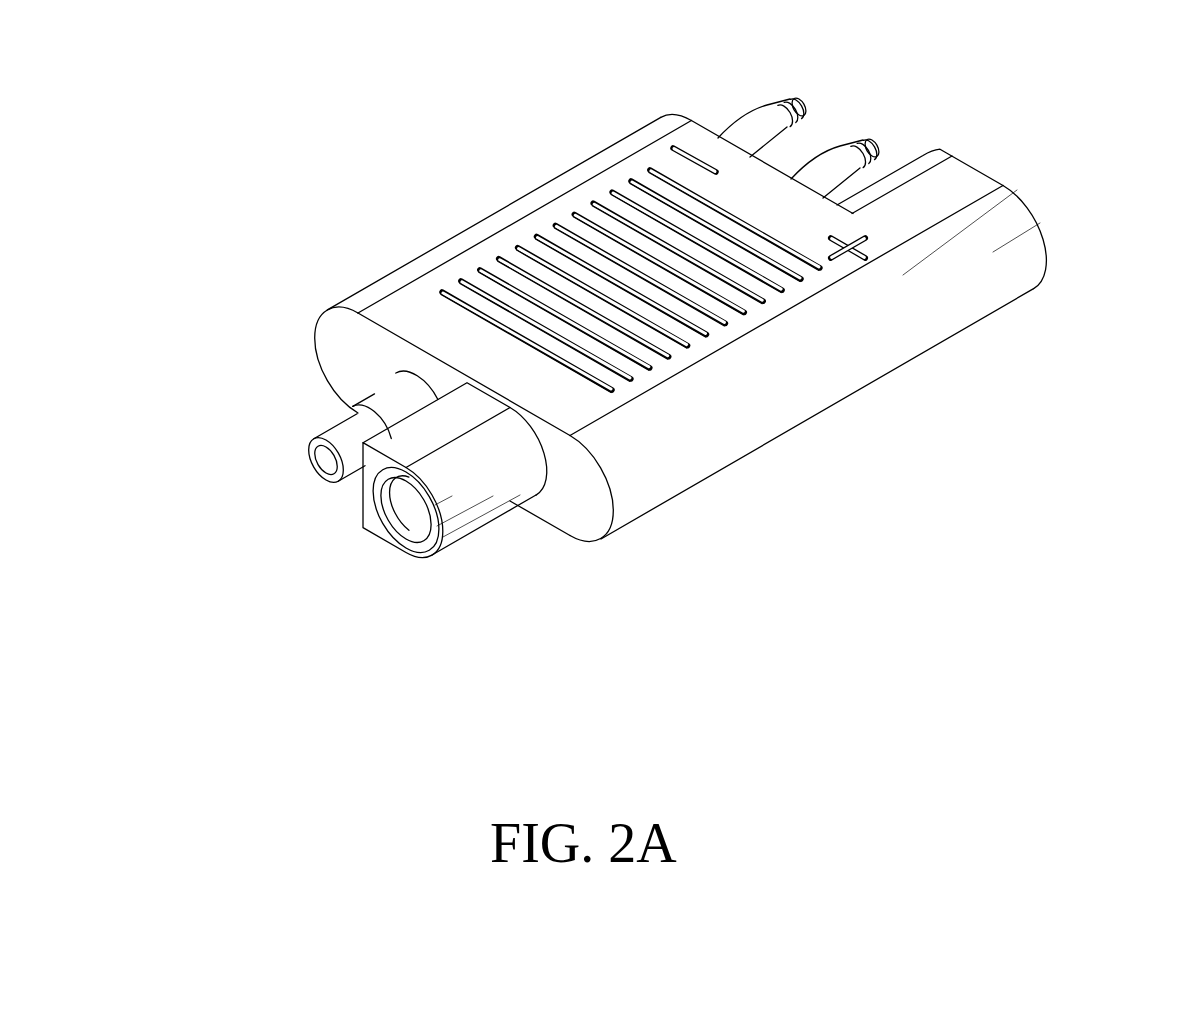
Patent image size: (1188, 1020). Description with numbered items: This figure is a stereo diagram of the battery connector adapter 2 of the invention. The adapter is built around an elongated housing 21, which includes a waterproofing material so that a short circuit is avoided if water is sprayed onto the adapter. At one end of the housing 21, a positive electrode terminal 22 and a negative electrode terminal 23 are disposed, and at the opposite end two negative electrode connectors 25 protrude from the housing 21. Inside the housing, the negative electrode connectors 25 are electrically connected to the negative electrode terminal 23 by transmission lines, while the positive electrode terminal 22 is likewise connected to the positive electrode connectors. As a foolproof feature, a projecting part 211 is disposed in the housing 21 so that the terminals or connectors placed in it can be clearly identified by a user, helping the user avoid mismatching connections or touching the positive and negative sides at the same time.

The battery connector adapter 2 is at (300, 546).
The housing 21 is at (873, 370).
The projecting part 211 is at (1027, 218).
The positive electrode terminal 22 is at (462, 515).
The negative electrode terminal 23 is at (333, 436).
The negative electrode connectors 25 is at (758, 118).